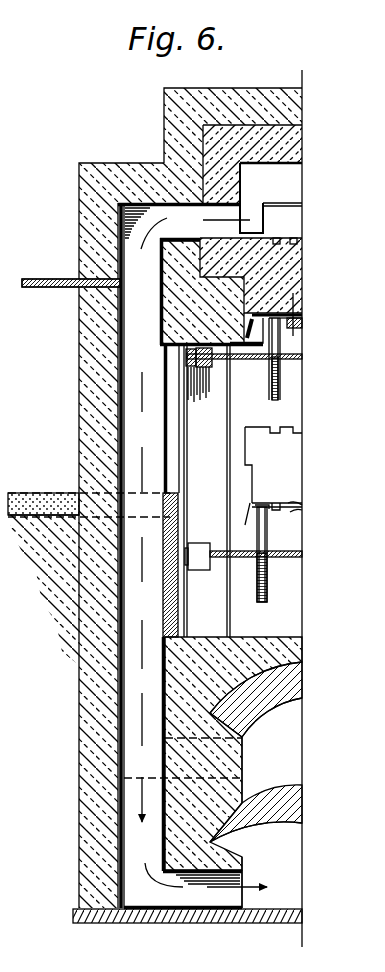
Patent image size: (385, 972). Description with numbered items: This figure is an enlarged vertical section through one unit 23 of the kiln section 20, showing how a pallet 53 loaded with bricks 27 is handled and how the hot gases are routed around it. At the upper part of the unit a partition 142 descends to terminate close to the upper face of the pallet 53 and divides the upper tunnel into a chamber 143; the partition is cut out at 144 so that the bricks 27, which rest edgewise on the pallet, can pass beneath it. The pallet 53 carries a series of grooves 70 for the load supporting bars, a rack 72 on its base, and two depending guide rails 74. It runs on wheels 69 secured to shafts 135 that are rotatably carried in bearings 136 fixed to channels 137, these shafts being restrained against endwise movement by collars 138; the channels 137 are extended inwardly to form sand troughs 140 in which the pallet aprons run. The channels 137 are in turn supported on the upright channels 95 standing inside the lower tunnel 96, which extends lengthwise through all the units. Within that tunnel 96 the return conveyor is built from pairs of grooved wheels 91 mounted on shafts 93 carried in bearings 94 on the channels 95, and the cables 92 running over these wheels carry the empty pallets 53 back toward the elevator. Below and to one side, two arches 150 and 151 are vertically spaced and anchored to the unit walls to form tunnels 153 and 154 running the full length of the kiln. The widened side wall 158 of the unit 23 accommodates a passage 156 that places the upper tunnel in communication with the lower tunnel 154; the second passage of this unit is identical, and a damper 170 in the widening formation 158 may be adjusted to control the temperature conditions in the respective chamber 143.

The section 20 is at (283, 84).
The unit 23 is at (241, 87).
The brick 27 is at (285, 216).
The pallet 53 is at (301, 279).
The wheel 69 is at (281, 386).
The groove 70 is at (284, 243).
The rack 72 is at (292, 320).
The guide rail 74 is at (281, 334).
The grooved wheel 91 is at (276, 577).
The cable 92 is at (259, 506).
The shaft 93 is at (297, 552).
The bearing 94 is at (200, 544).
The channel 95 is at (215, 422).
The tunnel 96 is at (241, 475).
The shaft 135 is at (286, 362).
The bearing 136 is at (210, 366).
The channel 137 is at (270, 320).
The collar 138 is at (186, 358).
The sand trough 140 is at (262, 344).
The partition 142 is at (303, 165).
The chamber 143 is at (280, 168).
The cutout 144 is at (294, 205).
The arch 150 is at (296, 681).
The arch 151 is at (298, 795).
The tunnel 153 is at (290, 706).
The tunnel 154 is at (294, 840).
The passage 156 is at (135, 430).
The widening formation 158 is at (79, 373).
The damper 170 is at (34, 279).